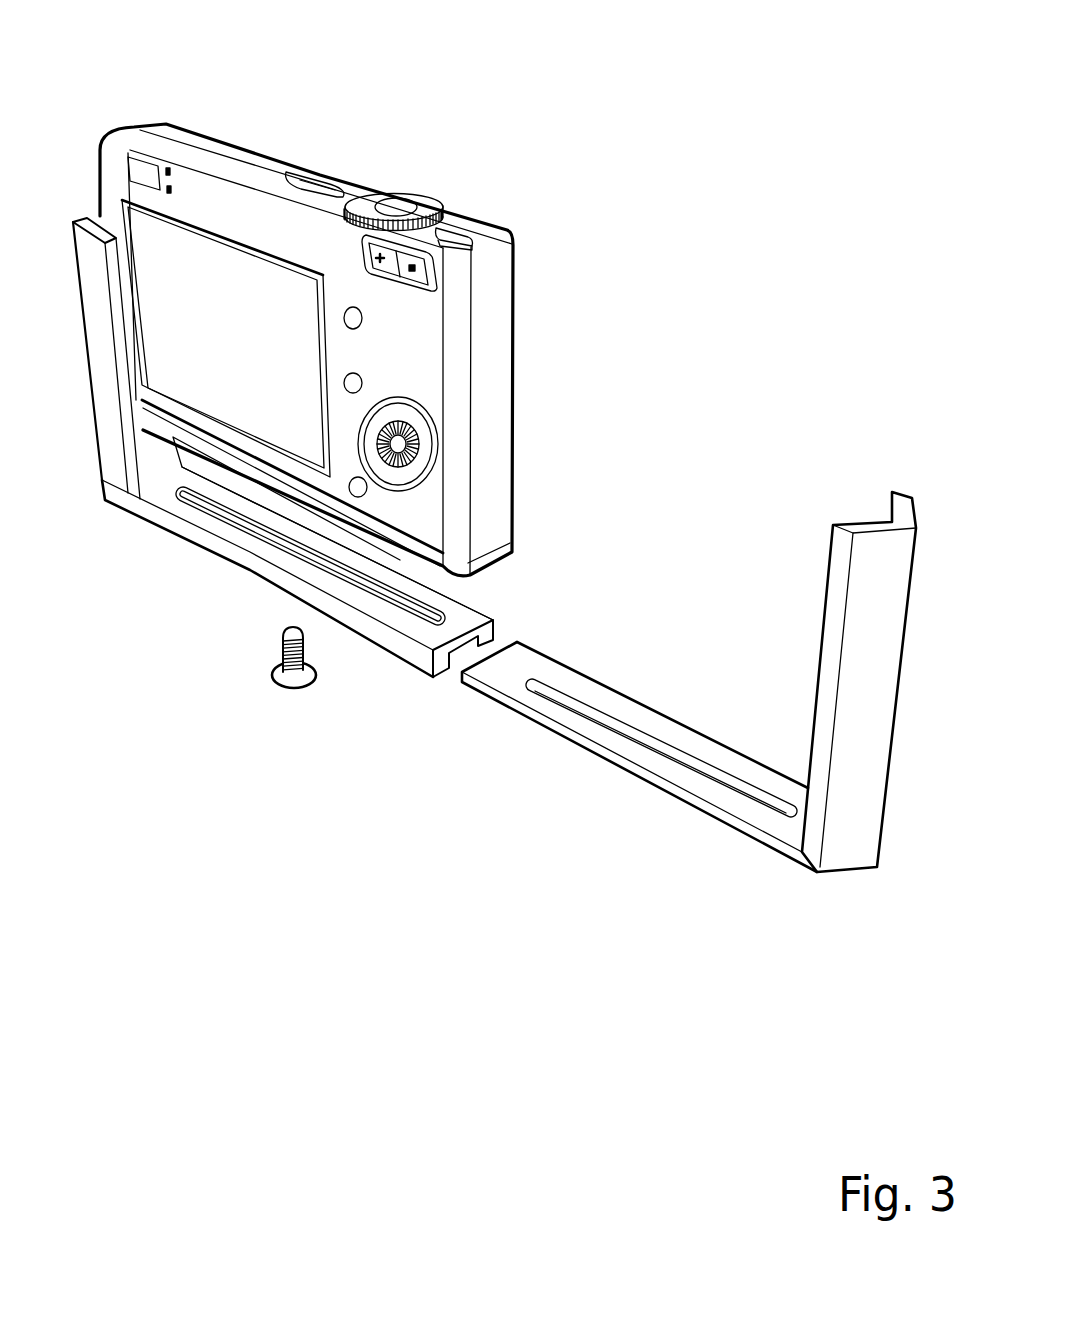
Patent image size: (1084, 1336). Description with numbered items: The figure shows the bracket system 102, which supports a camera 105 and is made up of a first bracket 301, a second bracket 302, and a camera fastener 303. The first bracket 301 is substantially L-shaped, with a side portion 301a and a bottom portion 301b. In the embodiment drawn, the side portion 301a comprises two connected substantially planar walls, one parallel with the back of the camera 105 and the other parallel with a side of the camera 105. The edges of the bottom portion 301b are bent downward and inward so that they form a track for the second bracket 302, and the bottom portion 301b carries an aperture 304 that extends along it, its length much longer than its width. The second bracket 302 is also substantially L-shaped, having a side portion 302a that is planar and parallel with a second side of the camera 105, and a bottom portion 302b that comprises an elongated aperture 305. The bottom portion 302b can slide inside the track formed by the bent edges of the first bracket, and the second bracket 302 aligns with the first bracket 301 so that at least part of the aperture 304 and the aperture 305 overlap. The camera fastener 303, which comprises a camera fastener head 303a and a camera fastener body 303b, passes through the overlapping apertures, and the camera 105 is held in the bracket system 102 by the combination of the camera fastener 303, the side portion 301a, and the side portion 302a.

The bracket system 102 is at (782, 243).
The camera 105 is at (490, 226).
The first bracket 301 is at (180, 527).
The side portion 301a is at (93, 220).
The bottom portion 301b is at (262, 585).
The second bracket 302 is at (800, 863).
The side portion 302a is at (830, 558).
The bottom portion 302b is at (566, 743).
The camera fastener 303 is at (308, 678).
The camera fastener head 303a is at (277, 688).
The camera fastener body 303b is at (283, 643).
The aperture 304 is at (450, 630).
The aperture 305 is at (567, 682).